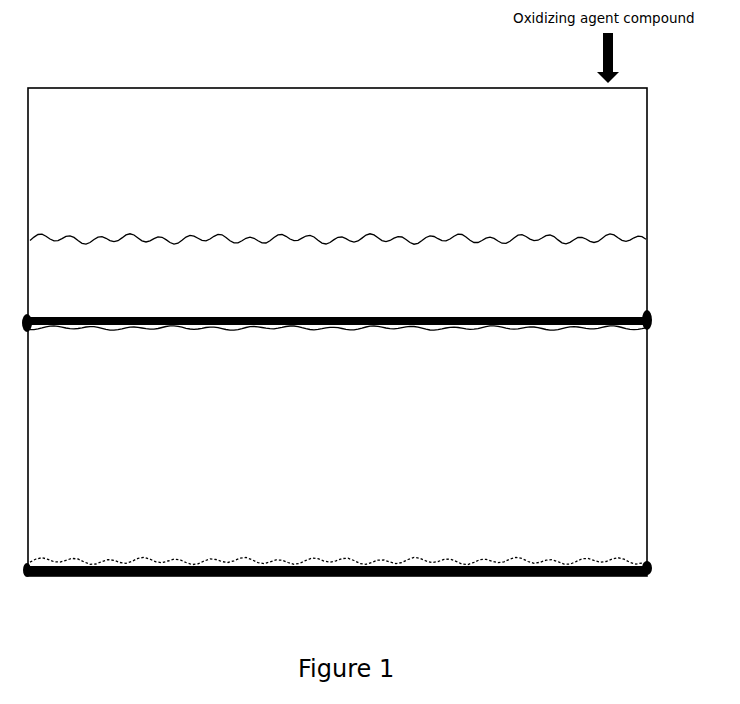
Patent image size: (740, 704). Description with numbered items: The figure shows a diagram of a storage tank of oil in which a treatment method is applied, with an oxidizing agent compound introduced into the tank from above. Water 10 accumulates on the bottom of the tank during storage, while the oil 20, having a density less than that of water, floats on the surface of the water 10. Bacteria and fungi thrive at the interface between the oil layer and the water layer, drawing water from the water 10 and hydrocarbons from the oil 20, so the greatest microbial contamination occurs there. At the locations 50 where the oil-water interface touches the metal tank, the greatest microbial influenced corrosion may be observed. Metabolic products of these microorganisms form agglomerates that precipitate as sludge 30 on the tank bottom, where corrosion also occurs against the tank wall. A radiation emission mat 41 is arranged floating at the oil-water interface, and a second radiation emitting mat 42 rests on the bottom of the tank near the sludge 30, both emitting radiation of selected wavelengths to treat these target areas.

The water 10 is at (630, 253).
The oil 20 is at (618, 388).
The sludge 30 is at (630, 564).
The radiation emission mat 41 is at (632, 312).
The second radiation emitting mat 42 is at (624, 576).
The locations where the oil-water interface touches the metal tank 50 is at (652, 322).